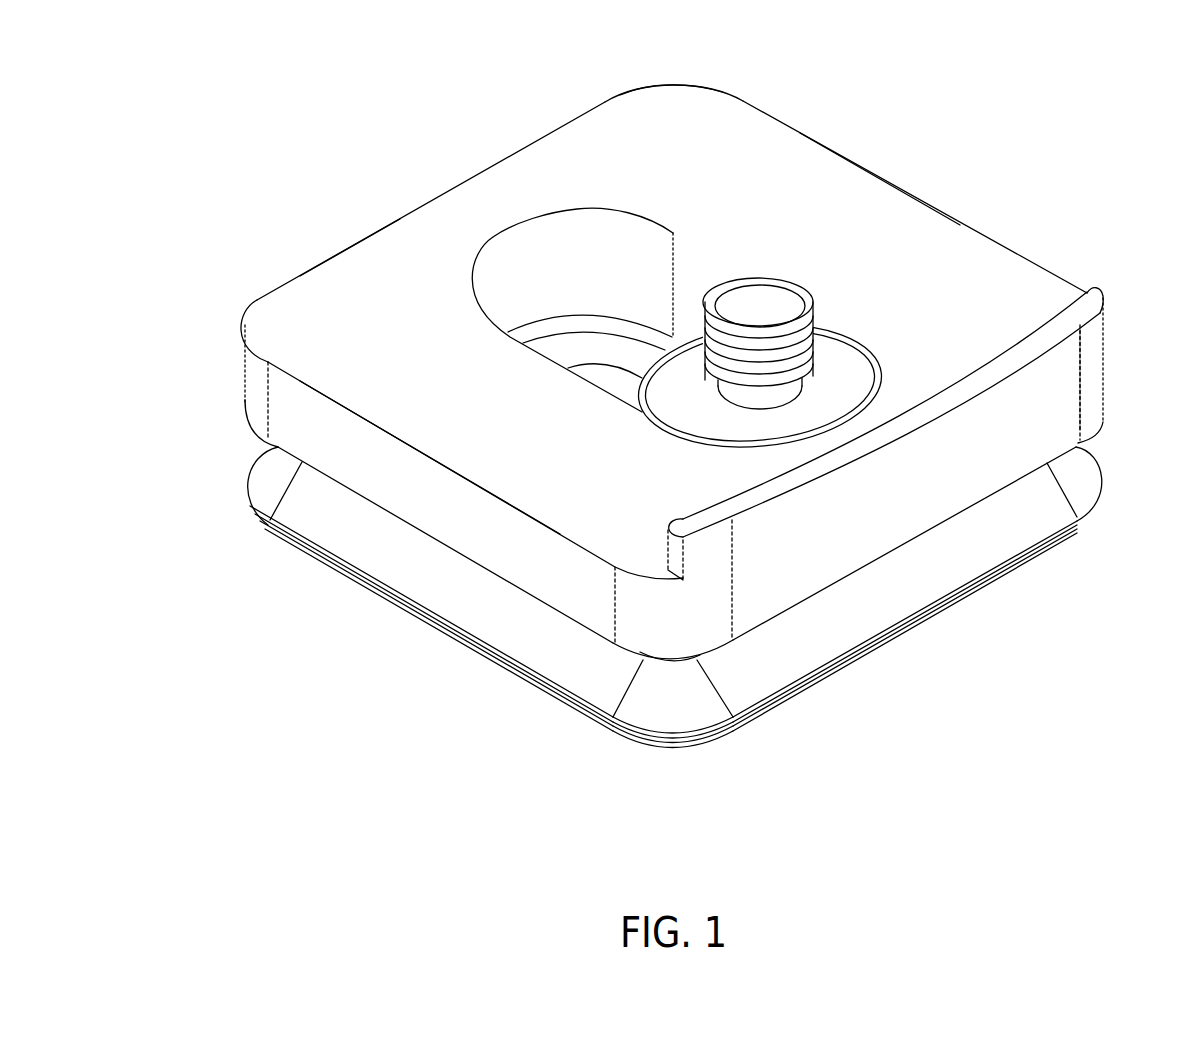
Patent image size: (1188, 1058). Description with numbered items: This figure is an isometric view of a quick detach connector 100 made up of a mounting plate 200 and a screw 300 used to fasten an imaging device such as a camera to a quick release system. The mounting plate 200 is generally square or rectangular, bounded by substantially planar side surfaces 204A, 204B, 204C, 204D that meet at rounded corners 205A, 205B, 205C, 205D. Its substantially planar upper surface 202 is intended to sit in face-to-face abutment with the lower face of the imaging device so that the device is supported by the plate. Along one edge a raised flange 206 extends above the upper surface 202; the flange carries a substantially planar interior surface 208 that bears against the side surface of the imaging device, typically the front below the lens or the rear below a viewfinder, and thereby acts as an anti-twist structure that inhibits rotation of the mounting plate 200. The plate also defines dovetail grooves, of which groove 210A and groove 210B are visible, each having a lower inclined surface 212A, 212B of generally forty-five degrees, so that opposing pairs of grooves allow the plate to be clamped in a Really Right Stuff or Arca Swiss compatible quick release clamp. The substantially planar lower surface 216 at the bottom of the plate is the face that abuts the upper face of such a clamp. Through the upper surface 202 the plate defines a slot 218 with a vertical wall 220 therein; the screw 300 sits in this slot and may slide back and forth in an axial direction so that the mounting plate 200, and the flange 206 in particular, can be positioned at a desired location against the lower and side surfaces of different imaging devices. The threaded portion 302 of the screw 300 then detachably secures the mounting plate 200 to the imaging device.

The quick detach connector 100 is at (1067, 123).
The mounting plate 200 is at (762, 158).
The upper surface 202 is at (773, 228).
The side surface 204A is at (960, 440).
The side surface 204B is at (512, 540).
The side surface 204C is at (322, 250).
The side surface 204D is at (907, 190).
The rounded corner 205A is at (703, 627).
The rounded corner 205B is at (262, 390).
The rounded corner 205C is at (666, 82).
The rounded corner 205D is at (1088, 388).
The raised flange 206 is at (1103, 287).
The interior surface 208 is at (1035, 304).
The dovetail groove 210A is at (903, 567).
The dovetail groove 210B is at (398, 555).
The lower inclined surface 212A is at (1005, 540).
The lower inclined surface 212B is at (555, 640).
The lower surface 216 is at (460, 650).
The slot 218 is at (517, 288).
The vertical wall 220 is at (608, 290).
The screw 300 is at (832, 373).
The threaded portion 302 is at (803, 350).